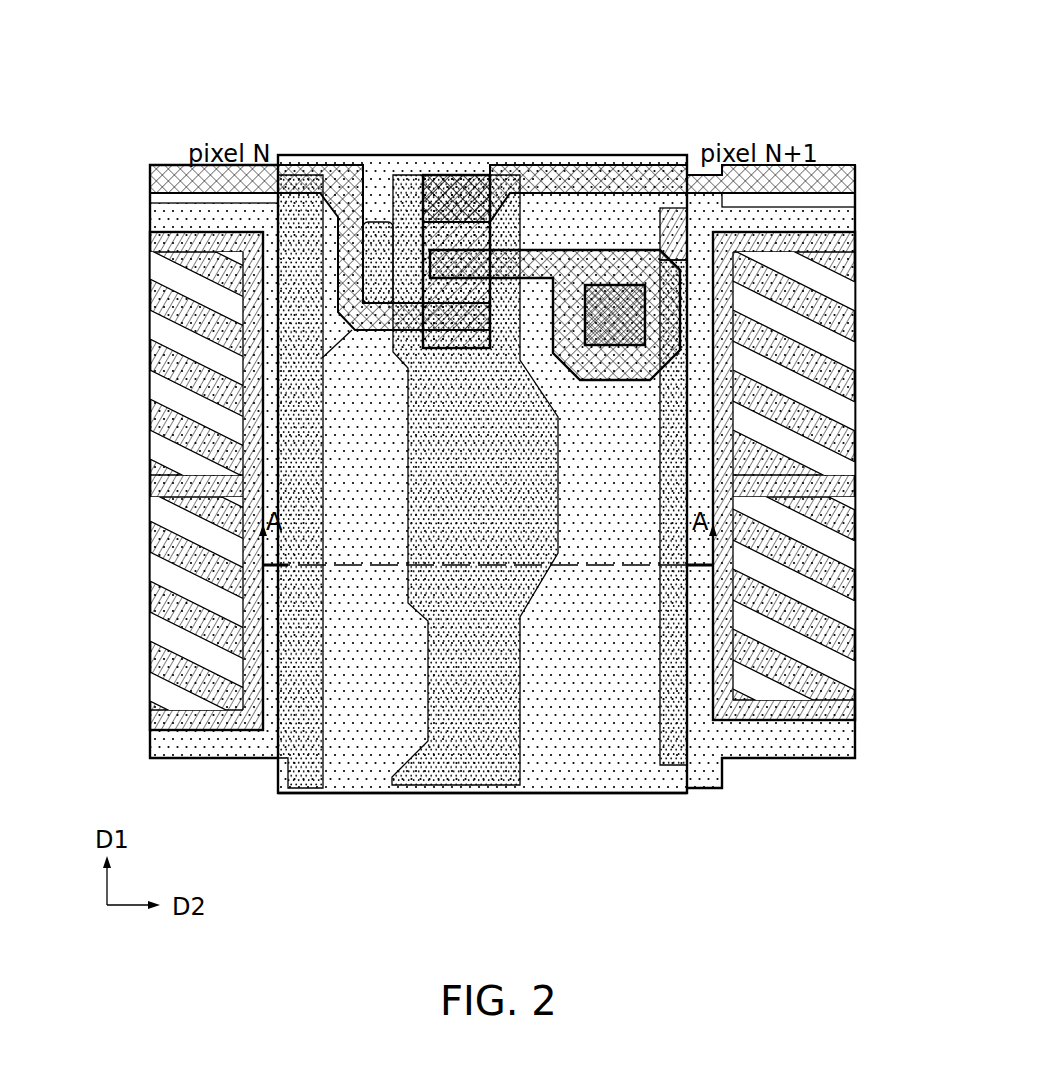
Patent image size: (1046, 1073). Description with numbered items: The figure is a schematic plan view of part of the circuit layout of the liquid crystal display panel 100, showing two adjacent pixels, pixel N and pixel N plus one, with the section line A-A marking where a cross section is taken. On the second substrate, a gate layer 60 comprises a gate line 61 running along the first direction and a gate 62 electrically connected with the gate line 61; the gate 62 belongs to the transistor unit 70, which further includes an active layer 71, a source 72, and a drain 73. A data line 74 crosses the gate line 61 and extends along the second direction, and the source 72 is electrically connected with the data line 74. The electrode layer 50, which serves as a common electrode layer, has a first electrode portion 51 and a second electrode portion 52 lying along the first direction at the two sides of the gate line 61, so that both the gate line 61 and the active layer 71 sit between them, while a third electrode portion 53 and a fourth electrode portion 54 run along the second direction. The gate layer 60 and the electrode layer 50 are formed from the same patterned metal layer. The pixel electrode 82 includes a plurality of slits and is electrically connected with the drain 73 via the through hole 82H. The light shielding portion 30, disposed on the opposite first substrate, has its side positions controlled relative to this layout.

The liquid crystal display panel 100 is at (232, 52).
The light shielding portion 30 is at (613, 795).
The electrode layer 50 is at (757, 770).
The first electrode portion 51 is at (303, 687).
The second electrode portion 52 is at (677, 707).
The third electrode portion 53 is at (160, 218).
The fourth electrode portion 54 is at (843, 217).
The gate layer 60 is at (460, 806).
The gate line 61 is at (493, 773).
The gate 62 is at (482, 190).
The transistor unit 70 is at (420, 110).
The active layer 71 is at (456, 178).
The source 72 is at (418, 178).
The drain 73 is at (533, 248).
The data line 74 is at (826, 180).
The pixel electrode 82 is at (840, 368).
The through hole 82H is at (618, 288).